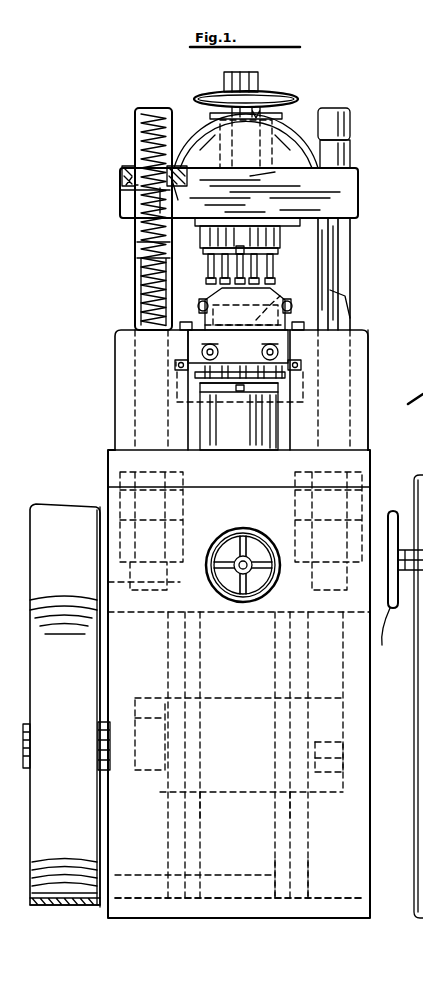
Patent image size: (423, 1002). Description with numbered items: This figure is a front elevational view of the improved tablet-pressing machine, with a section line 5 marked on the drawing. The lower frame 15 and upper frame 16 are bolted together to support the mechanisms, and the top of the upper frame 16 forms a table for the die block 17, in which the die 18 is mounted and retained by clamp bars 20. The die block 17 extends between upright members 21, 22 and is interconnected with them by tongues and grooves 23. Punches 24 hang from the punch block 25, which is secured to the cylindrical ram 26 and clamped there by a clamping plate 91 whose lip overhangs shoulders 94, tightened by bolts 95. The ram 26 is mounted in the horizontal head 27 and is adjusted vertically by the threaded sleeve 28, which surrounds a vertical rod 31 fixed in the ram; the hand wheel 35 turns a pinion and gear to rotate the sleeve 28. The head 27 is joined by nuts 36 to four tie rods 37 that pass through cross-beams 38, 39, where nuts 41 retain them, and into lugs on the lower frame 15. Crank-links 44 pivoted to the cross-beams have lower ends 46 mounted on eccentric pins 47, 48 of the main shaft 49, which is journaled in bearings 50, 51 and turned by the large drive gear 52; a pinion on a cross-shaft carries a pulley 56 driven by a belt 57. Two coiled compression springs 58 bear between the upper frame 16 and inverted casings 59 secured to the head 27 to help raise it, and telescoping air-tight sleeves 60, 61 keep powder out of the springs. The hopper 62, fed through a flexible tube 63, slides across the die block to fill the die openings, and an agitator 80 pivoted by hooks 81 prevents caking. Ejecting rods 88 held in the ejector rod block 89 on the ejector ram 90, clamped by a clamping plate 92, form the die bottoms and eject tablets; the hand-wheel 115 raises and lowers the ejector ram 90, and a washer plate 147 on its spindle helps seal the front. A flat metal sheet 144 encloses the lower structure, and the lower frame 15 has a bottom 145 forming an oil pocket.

The section line 5 is at (407, 552).
The lower frame 15 is at (120, 810).
The upper frame 16 is at (122, 464).
The die block 17 is at (236, 376).
The die 18 is at (340, 319).
The clamp bars 20 is at (298, 321).
The upright member 21 is at (135, 410).
The upright member 22 is at (368, 425).
The tongues and grooves 23 is at (176, 368).
The punches 24 is at (352, 262).
The punch block 25 is at (330, 242).
The ram 26 is at (350, 226).
The horizontal head 27 is at (348, 199).
The threaded sleeve 28 is at (352, 159).
The vertical rod 31 is at (283, 121).
The hand wheel 35 is at (290, 93).
The nuts 36 is at (350, 147).
The tie rods 37 is at (338, 278).
The cross-beam 38 is at (120, 500).
The cross-beam 39 is at (352, 487).
The nuts 41 is at (108, 584).
The crank-links 44 is at (147, 657).
The lower ends 46 is at (347, 764).
The eccentric pin 47 is at (135, 719).
The eccentric pin 48 is at (347, 724).
The main shaft 49 is at (165, 760).
The bearing 50 is at (174, 808).
The bearing 51 is at (302, 800).
The drive gear 52 is at (272, 866).
The pulley 56 is at (82, 902).
The belt 57 is at (61, 712).
The coiled compression springs 58 is at (120, 219).
The flanged tubular inverted casings 59 is at (135, 138).
The air-tight sleeve 60 is at (136, 233).
The air-tight sleeve 61 is at (136, 262).
The hopper 62 is at (262, 298).
The flexible tube 63 is at (257, 78).
The agitator 80 is at (345, 291).
The hooks 81 is at (199, 308).
The tablet ejecting rods 88 is at (302, 382).
The ejector rod block 89 is at (288, 392).
The ejector ram 90 is at (280, 434).
The clamping plate 91 is at (200, 248).
The clamping plate 92 is at (290, 412).
The shoulders 94 is at (190, 417).
The bolts 95 is at (242, 393).
The hand-wheel 115 is at (260, 614).
The flat metal sheet 144 is at (112, 794).
The bottom 145 is at (242, 902).
The washer plate 147 is at (254, 534).